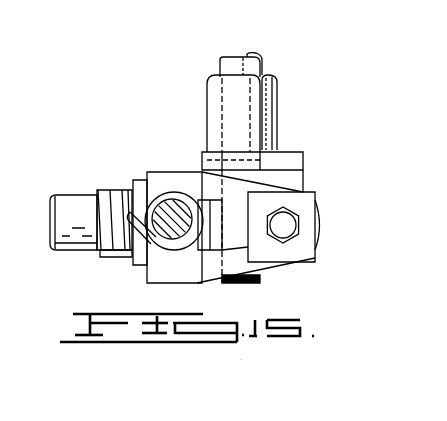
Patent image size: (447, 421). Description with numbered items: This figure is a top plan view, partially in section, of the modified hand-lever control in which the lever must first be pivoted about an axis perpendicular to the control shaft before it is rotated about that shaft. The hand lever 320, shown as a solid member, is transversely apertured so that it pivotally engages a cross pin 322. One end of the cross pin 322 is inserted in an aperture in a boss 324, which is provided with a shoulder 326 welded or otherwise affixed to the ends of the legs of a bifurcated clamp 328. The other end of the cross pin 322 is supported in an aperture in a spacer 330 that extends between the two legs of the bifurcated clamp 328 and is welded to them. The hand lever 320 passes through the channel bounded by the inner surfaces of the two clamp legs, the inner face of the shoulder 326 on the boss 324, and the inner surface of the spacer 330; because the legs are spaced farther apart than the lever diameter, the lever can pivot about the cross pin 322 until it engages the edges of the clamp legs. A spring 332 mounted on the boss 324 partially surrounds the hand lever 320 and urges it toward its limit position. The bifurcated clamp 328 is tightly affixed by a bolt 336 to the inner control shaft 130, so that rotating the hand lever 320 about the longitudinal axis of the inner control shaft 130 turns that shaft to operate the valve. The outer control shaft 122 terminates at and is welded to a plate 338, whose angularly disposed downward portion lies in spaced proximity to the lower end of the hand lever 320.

The inner control shaft 130 is at (263, 60).
The outer control shaft 122 is at (278, 93).
The plate 338 is at (283, 160).
The hand lever 320 is at (156, 195).
The cross pin 322 is at (198, 286).
The bolt 336 is at (290, 222).
The spacer 330 is at (190, 251).
The bifurcated clamp 328 is at (156, 184).
The shoulder 326 is at (144, 179).
The boss 324 is at (63, 207).
The spring 332 is at (112, 257).